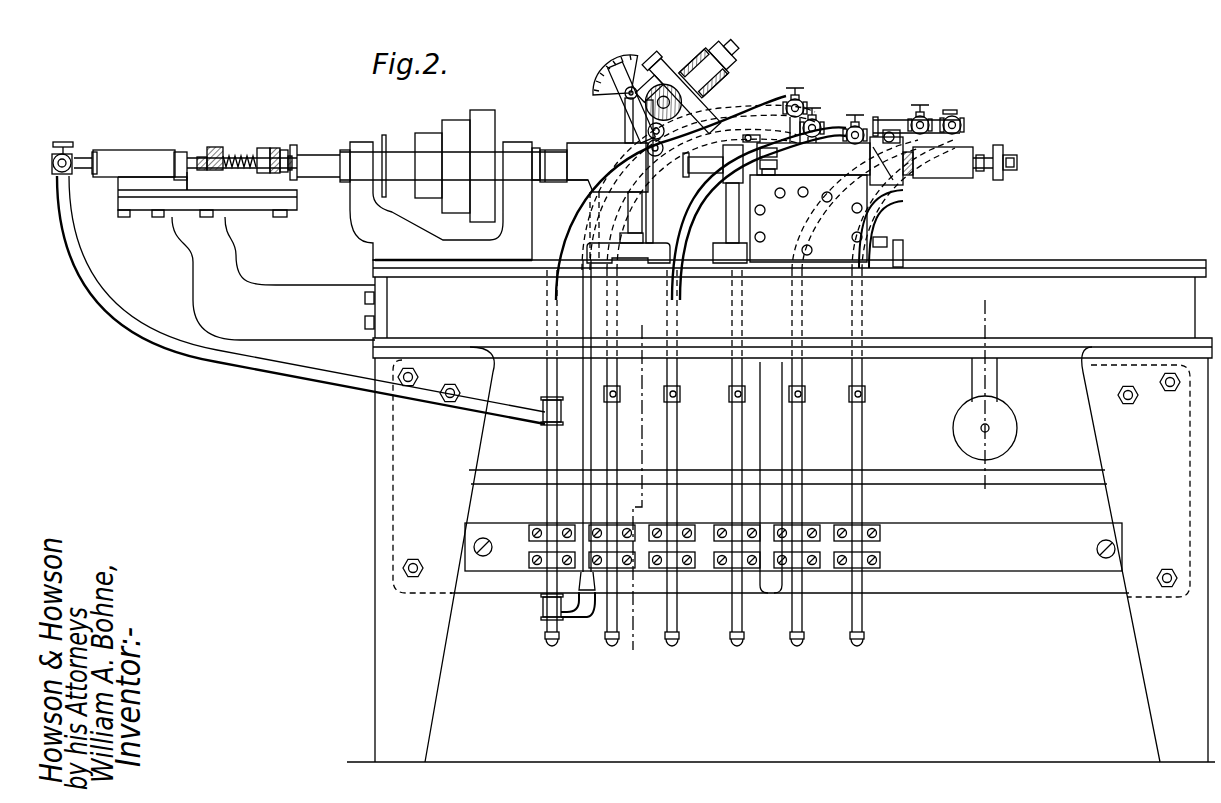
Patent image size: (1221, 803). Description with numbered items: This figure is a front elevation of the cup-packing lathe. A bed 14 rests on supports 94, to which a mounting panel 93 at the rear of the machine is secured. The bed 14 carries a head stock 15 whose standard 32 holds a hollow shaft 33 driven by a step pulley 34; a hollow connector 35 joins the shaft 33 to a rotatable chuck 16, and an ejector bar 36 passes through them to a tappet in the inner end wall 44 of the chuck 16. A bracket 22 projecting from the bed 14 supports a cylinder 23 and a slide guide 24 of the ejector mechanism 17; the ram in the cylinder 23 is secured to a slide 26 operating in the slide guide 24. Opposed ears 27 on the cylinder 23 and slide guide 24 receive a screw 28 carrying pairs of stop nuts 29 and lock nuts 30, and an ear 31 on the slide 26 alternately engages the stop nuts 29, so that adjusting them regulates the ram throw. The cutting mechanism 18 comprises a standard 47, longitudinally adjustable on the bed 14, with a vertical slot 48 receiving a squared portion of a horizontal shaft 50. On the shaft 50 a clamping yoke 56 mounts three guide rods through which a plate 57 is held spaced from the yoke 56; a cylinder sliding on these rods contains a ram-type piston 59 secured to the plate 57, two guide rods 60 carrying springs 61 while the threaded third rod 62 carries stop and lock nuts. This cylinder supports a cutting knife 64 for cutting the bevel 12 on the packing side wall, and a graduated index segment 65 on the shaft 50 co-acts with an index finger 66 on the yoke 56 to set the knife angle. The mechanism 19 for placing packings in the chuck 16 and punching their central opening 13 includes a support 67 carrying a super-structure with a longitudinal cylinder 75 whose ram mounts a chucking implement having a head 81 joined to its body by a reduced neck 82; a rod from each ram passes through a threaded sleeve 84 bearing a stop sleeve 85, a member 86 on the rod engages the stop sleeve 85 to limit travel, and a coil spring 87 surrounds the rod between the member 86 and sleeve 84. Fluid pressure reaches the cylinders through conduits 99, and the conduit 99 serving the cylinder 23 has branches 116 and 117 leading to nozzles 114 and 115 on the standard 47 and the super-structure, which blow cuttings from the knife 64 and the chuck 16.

The bevel 12 is at (660, 665).
The central opening 13 is at (966, 505).
The bed 14 is at (938, 290).
The head stock 15 is at (486, 108).
The rotatable chuck 16 is at (588, 138).
The ejector mechanism 17 is at (158, 146).
The cutting mechanism 18 is at (654, 70).
The packing placing and punching mechanism 19 is at (835, 116).
The bracket 22 is at (292, 283).
The cylinder 23 is at (140, 170).
The slide guide 24 is at (262, 205).
The slide 26 is at (283, 150).
The opposed ears 27 is at (183, 152).
The screw 28 is at (240, 156).
The stop nuts 29 is at (215, 147).
The lock nuts 30 is at (202, 157).
The ear 31 is at (262, 148).
The standard 32 is at (520, 210).
The hollow shaft 33 is at (384, 138).
The step pulley 34 is at (428, 133).
The connector 35 is at (552, 150).
The ejector bar 36 is at (326, 180).
The inner end wall 44 is at (572, 187).
The standard 47 is at (634, 240).
The vertical slot 48 is at (607, 167).
The horizontally disposed shaft 50 is at (624, 112).
The clamping yoke 56 is at (670, 76).
The plate 57 is at (724, 66).
The ram-type piston 59 is at (708, 58).
The guide rods 60 is at (700, 96).
The springs 61 is at (664, 136).
The third guide rod 62 is at (697, 70).
The cutting knife 64 is at (655, 154).
The index segment 65 is at (604, 68).
The index finger 66 is at (636, 58).
The support 67 is at (893, 222).
The cylinder 75 is at (810, 202).
The head 81 is at (668, 182).
The reduced neck 82 is at (727, 185).
The threaded sleeve 84 is at (904, 180).
The stop sleeve 85 is at (940, 178).
The stop member 86 is at (1008, 180).
The coil spring 87 is at (990, 175).
The mounting panel 93 is at (935, 594).
The supports 94 is at (450, 625).
The conduit 99 is at (731, 616).
The nozzle 114 is at (695, 100).
The nozzle 115 is at (740, 110).
The branch 116 is at (545, 377).
The branch 117 is at (592, 440).